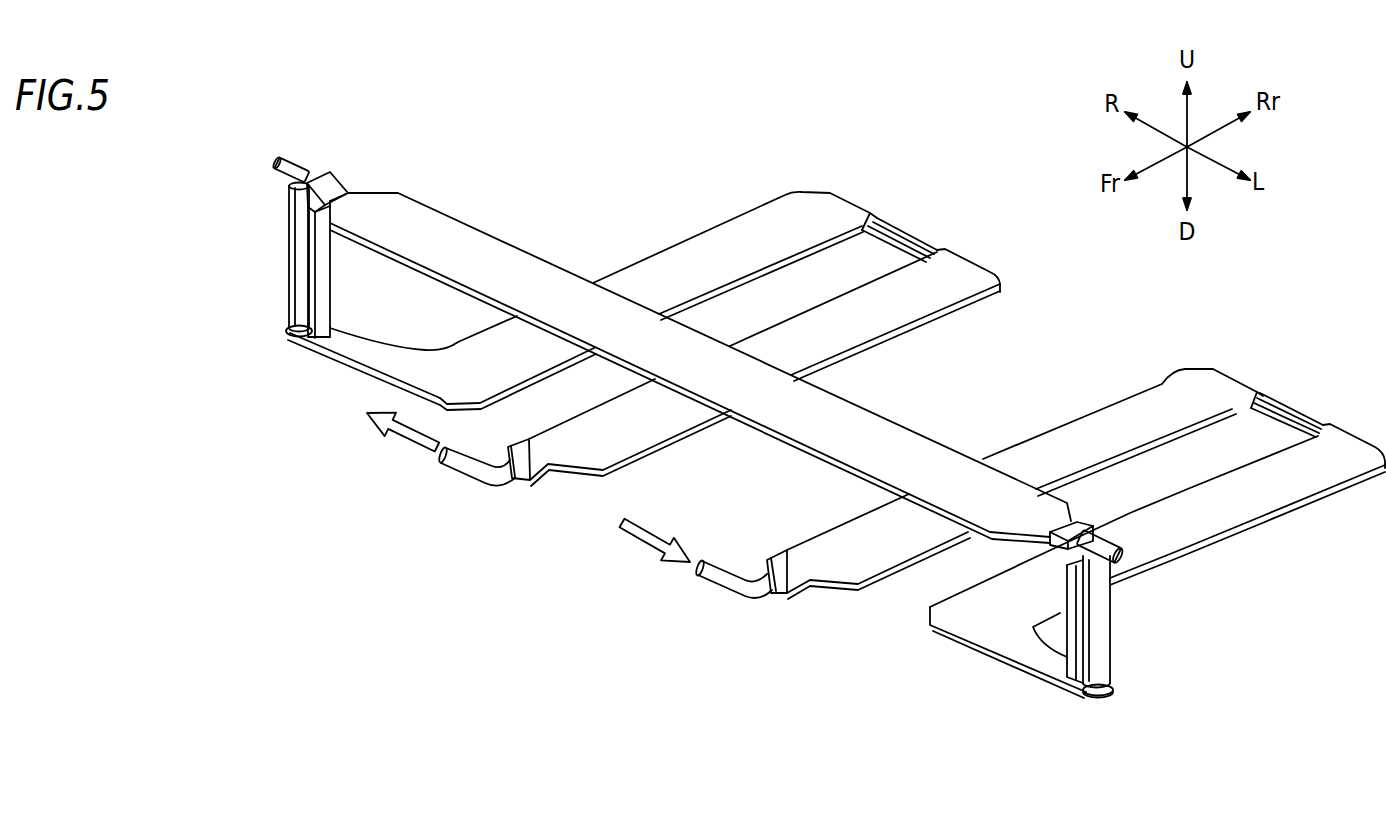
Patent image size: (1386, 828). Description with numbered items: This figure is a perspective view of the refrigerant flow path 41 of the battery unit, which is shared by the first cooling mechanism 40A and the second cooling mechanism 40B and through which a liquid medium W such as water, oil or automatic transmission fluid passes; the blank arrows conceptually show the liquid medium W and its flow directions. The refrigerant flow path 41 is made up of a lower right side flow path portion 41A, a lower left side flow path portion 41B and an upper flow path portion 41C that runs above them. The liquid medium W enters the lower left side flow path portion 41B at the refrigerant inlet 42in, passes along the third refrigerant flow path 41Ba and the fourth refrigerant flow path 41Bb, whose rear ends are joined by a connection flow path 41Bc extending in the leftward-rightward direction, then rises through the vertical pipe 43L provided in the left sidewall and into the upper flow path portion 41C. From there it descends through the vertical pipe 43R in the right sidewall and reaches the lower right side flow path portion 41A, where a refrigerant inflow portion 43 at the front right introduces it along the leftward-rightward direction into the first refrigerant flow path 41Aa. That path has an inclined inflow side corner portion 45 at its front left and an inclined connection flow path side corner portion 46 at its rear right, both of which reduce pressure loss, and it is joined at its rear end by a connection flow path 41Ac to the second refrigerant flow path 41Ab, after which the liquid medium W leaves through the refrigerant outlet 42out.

The refrigerant flow path 41 is at (653, 103).
The first cooling mechanism 40A is at (658, 173).
The second cooling mechanism 40B is at (455, 170).
The lower right side flow path portion 41A is at (806, 178).
The first refrigerant flow path 41Aa is at (634, 253).
The second refrigerant flow path 41Ab is at (845, 366).
The connection flow path 41Ac is at (913, 224).
The lower left side flow path portion 41B is at (1204, 348).
The third refrigerant flow path 41Ba is at (1062, 409).
The fourth refrigerant flow path 41Bb is at (1268, 528).
The connection flow path 41Bc is at (1303, 399).
The upper flow path portion 41C is at (399, 180).
The refrigerant inflow portion 43 is at (352, 376).
The vertical pipe 43R is at (289, 258).
The vertical pipe 43L is at (1113, 625).
The inflow side corner portion 45 is at (473, 417).
The connection flow path side corner portion 46 is at (827, 179).
The refrigerant outlet 42out is at (507, 491).
The refrigerant inlet 42in is at (765, 602).
The liquid medium W is at (400, 447).